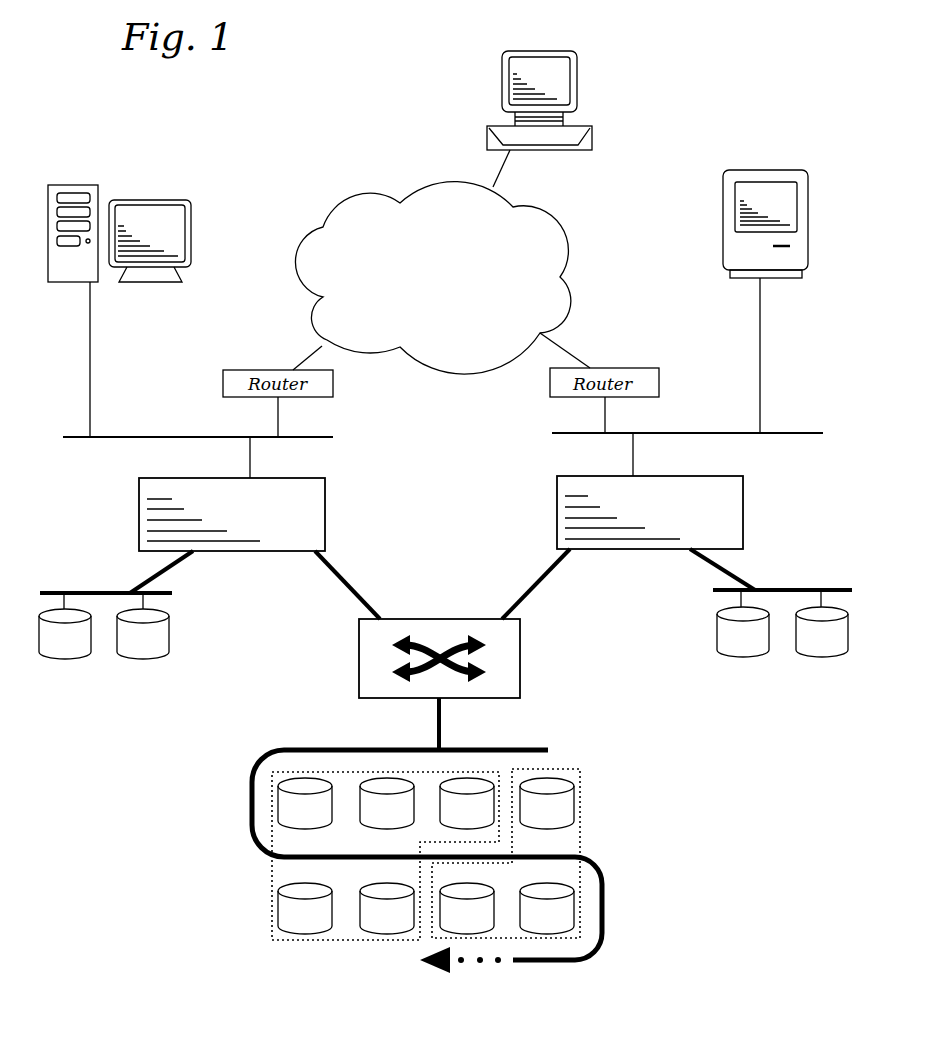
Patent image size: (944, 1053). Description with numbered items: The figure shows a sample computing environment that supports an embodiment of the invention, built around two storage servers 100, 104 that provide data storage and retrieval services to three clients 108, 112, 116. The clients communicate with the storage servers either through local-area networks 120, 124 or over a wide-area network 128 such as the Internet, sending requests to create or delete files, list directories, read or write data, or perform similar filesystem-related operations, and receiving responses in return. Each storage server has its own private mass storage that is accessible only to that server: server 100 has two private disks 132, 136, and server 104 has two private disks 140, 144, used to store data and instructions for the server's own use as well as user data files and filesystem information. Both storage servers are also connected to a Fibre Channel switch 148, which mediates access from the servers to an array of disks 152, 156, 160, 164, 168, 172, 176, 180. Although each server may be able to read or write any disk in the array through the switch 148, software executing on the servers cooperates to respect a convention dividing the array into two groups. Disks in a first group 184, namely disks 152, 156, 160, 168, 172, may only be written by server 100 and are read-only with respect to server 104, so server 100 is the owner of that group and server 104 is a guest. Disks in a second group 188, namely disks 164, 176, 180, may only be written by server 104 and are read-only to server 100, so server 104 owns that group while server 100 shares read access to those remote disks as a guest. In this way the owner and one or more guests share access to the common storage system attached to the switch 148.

The storage server 100 is at (232, 514).
The storage server 104 is at (650, 512).
The client 108 is at (119, 244).
The client 112 is at (539, 111).
The client 116 is at (766, 236).
The local-area network 120 is at (198, 447).
The local-area network 124 is at (687, 444).
The wide-area network 128 is at (432, 278).
The disk 132 is at (65, 626).
The disk 136 is at (143, 626).
The disk 140 is at (743, 623).
The disk 144 is at (822, 623).
The Fibre Channel switch 148 is at (439, 658).
The disk 152 is at (305, 803).
The disk 156 is at (387, 803).
The disk 160 is at (467, 803).
The disk 164 is at (547, 803).
The disk 168 is at (305, 908).
The disk 172 is at (387, 908).
The disk 176 is at (467, 908).
The disk 180 is at (547, 908).
The disk group 184 is at (273, 940).
The disk group 188 is at (580, 840).